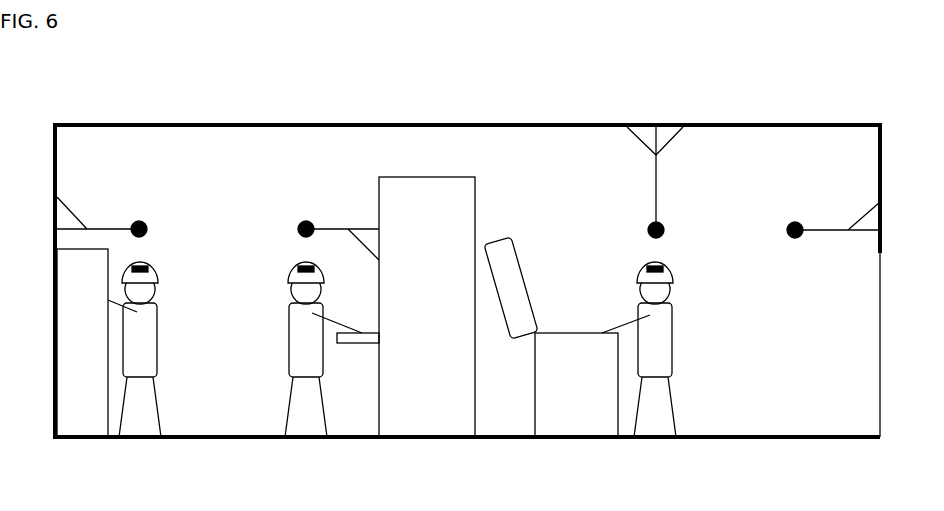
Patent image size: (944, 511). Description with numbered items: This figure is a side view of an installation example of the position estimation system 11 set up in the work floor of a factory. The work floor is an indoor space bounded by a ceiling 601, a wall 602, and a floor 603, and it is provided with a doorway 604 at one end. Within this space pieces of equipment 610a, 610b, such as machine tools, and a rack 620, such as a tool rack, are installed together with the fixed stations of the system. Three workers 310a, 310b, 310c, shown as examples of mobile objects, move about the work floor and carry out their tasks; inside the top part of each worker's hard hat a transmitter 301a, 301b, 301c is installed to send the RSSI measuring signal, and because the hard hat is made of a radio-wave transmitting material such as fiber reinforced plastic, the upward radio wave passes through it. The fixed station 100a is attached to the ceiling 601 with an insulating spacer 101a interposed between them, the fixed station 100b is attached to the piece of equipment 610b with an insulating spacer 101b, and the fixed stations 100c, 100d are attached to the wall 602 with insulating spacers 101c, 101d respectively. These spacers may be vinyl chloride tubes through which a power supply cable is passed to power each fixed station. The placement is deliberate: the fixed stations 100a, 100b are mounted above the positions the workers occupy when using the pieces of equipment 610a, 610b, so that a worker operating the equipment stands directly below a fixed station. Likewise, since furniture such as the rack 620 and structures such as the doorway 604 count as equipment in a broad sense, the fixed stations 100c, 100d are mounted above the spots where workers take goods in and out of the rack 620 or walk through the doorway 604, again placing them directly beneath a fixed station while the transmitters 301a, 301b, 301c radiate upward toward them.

The position estimation system 11 is at (586, 72).
The fixed station 100a is at (662, 222).
The fixed station 100b is at (300, 222).
The fixed station 100c is at (170, 198).
The fixed station 100d is at (790, 222).
The insulating spacer 101a is at (652, 211).
The insulating spacer 101b is at (325, 229).
The insulating spacer 101c is at (118, 229).
The insulating spacer 101d is at (815, 230).
The transmitter 301a is at (664, 264).
The transmitter 301b is at (300, 264).
The transmitter 301c is at (150, 264).
The worker 310a is at (660, 337).
The worker 310b is at (297, 334).
The worker 310c is at (148, 342).
The ceiling 601 is at (362, 105).
The wall 602 is at (53, 153).
The floor 603 is at (705, 440).
The doorway 604 is at (880, 397).
The piece of equipment 610a is at (567, 420).
The piece of equipment 610b is at (418, 420).
The rack 620 is at (80, 420).